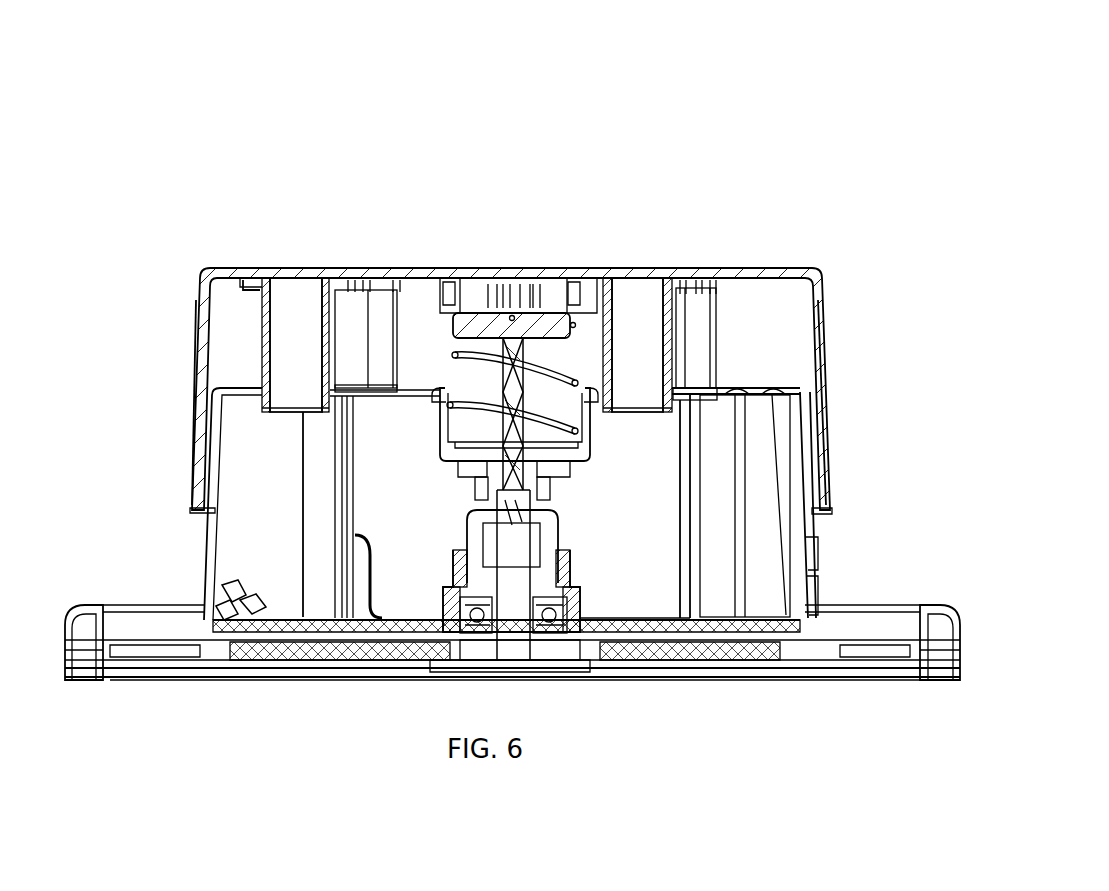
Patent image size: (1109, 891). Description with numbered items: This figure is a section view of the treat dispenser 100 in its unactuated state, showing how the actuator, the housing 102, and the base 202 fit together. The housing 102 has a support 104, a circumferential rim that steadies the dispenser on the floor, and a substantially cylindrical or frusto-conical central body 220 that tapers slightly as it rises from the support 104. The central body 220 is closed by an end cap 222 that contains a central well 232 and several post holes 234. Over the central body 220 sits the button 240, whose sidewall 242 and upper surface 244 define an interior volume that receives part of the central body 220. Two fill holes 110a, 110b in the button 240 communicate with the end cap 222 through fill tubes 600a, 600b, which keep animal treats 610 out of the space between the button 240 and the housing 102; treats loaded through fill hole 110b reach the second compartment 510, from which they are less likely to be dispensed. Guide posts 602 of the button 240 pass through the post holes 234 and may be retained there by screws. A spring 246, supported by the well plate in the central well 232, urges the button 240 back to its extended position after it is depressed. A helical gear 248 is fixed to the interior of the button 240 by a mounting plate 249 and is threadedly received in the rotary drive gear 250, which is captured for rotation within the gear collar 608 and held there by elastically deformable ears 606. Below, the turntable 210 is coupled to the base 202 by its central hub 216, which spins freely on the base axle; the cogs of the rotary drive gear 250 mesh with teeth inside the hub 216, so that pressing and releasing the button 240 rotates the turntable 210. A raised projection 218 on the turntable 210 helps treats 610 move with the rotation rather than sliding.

The treat dispenser 100 is at (750, 104).
The housing 102 is at (200, 532).
The support 104 is at (80, 605).
The fill hole 110a is at (301, 292).
The fill hole 110b is at (647, 290).
The base 202 is at (262, 698).
The turntable 210 is at (805, 627).
The central hub 216 is at (575, 572).
The projection 218 is at (742, 627).
The central body 220 is at (205, 592).
The end cap 222 is at (800, 385).
The central well 232 is at (461, 401).
The post hole 234 is at (390, 402).
The button 240 is at (818, 264).
The sidewall 242 is at (202, 412).
The upper surface 244 is at (245, 262).
The spring 246 is at (575, 432).
The helical gear 248 is at (527, 340).
The mounting plate 249 is at (478, 318).
The rotary drive gear 250 is at (590, 520).
The second compartment 510 is at (690, 596).
The fill tube 600a is at (265, 355).
The fill tube 600b is at (683, 375).
The guide post 602 is at (385, 320).
The ear 606 is at (548, 460).
The gear collar 608 is at (548, 483).
The animal treat 610 is at (232, 592).